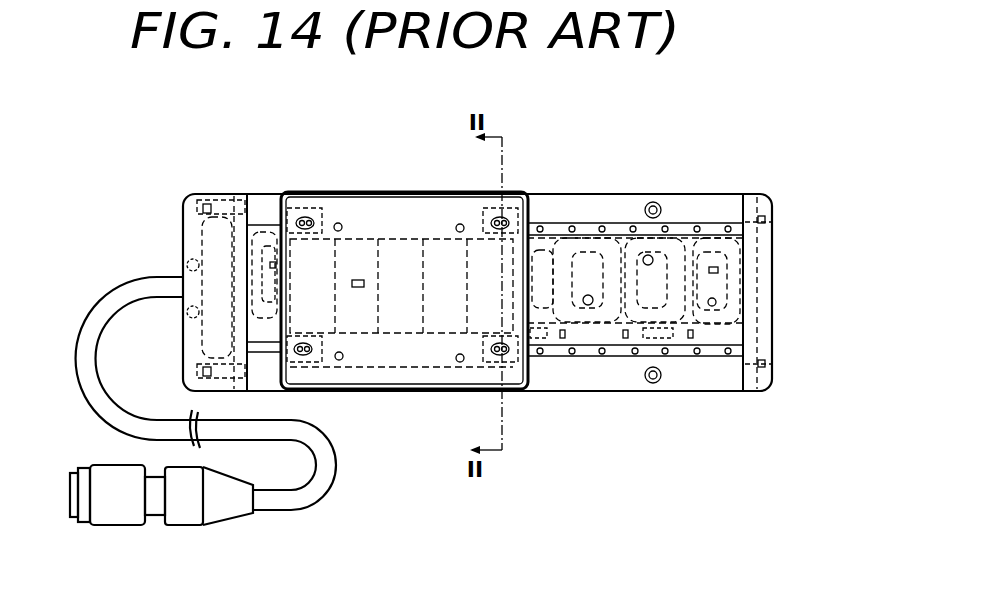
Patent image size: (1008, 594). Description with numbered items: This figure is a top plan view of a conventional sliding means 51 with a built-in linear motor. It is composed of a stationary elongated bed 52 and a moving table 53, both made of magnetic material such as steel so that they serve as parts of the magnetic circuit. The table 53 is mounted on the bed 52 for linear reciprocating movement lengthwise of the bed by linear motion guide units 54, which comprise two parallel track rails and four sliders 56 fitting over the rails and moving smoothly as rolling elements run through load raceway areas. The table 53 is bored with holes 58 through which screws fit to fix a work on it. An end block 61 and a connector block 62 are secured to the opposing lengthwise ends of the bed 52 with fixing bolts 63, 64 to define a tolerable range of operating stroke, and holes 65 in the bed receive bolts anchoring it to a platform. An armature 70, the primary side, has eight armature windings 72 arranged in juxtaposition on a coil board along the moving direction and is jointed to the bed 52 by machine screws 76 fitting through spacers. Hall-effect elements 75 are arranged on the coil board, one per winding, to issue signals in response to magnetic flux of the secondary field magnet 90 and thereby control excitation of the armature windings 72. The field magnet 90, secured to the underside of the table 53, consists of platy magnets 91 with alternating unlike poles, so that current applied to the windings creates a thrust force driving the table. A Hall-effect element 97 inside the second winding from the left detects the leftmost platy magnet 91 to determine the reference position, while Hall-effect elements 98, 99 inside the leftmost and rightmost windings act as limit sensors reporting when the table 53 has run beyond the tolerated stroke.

The sliding means 51 is at (558, 194).
The stationary bed 52 is at (591, 194).
The moving table 53 is at (415, 192).
The linear motion guide units 54 is at (684, 226).
The sliders 56 is at (304, 216).
The holes 58 is at (338, 223).
The end block 61 is at (768, 283).
The connector block 62 is at (190, 238).
The fixing bolts 63 is at (768, 220).
The fixing bolts 64 is at (193, 193).
The holes 65 is at (657, 203).
The armature 70 is at (732, 338).
The armature windings 72 is at (735, 260).
The Hall-effect elements 75 is at (563, 340).
The machine screws 76 is at (648, 256).
The field magnet 90 is at (357, 236).
The platy magnets 91 is at (327, 313).
The Hall-effect element 97 is at (359, 280).
The Hall-effect element 98 is at (272, 262).
The Hall-effect element 99 is at (714, 265).